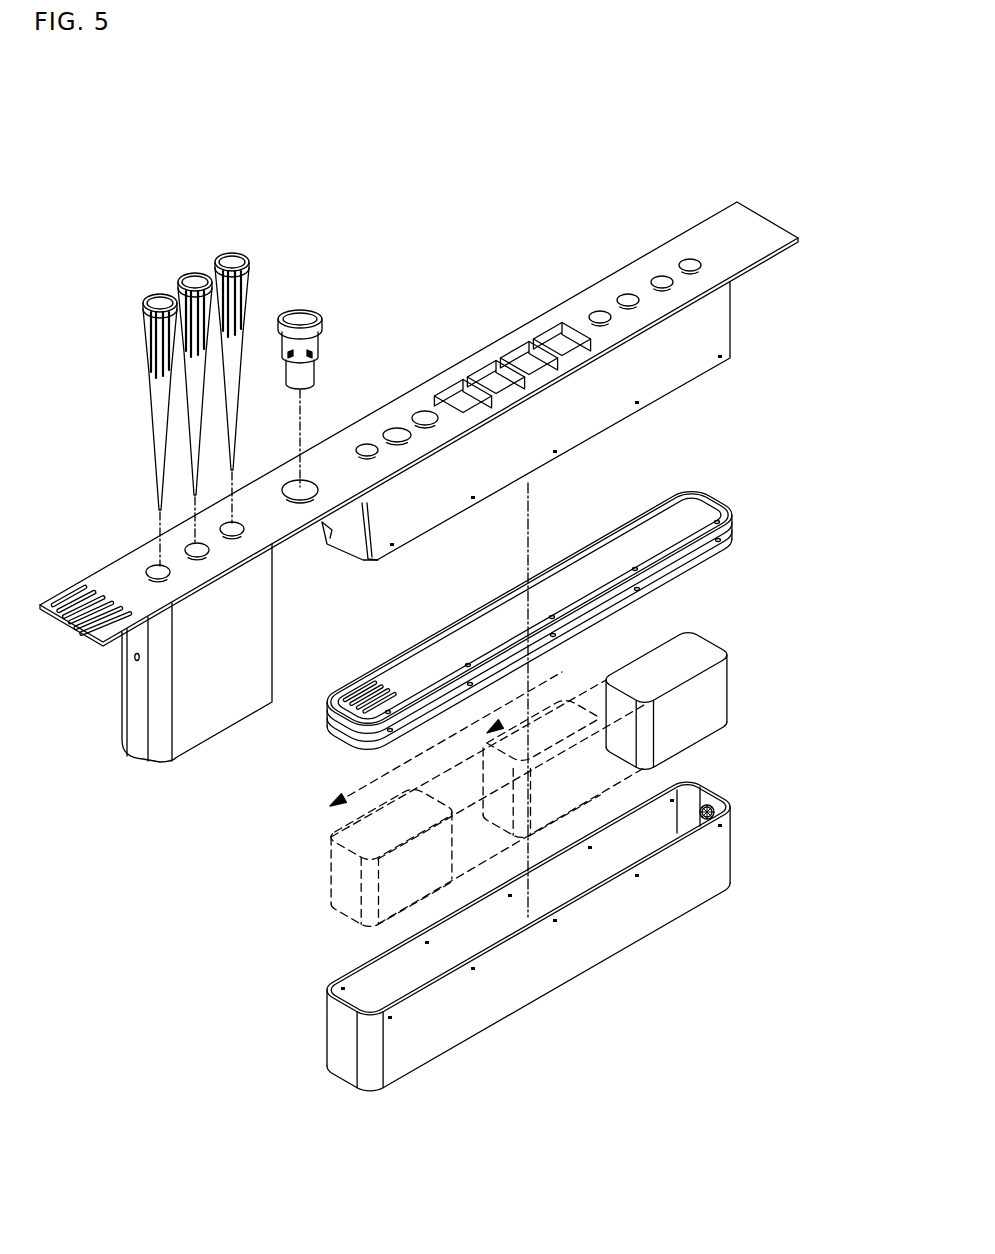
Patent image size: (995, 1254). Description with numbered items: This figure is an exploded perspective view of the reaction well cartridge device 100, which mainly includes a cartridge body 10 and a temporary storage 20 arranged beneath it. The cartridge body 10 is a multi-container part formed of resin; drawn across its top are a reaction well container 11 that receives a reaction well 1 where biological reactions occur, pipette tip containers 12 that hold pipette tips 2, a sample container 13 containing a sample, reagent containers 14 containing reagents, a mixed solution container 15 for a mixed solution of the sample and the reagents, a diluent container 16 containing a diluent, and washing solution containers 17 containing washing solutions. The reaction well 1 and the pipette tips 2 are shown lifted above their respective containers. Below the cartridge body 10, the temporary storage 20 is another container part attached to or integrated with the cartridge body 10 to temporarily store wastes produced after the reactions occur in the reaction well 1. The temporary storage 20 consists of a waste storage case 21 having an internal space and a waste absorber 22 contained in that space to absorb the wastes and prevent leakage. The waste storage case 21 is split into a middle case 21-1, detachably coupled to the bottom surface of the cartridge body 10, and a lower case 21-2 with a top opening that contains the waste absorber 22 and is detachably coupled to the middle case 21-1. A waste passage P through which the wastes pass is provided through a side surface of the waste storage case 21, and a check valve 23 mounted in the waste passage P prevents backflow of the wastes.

The reaction well cartridge device 100 is at (203, 142).
The cartridge body 10 is at (772, 208).
The reaction well 1 is at (300, 314).
The pipette tips 2 is at (215, 260).
The reaction well container 11 is at (292, 487).
The pipette tip containers 12 is at (246, 534).
The sample container 13 is at (367, 447).
The reagent containers 14 is at (690, 264).
The mixed solution container 15 is at (397, 432).
The diluent container 16 is at (425, 415).
The washing solution containers 17 is at (568, 333).
The temporary storage 20 is at (772, 559).
The waste storage case 21 is at (207, 828).
The middle case 21-1 is at (340, 738).
The lower case 21-2 is at (343, 987).
The waste absorber 22 is at (727, 687).
The check valve 23 is at (712, 806).
The waste passage P is at (708, 818).